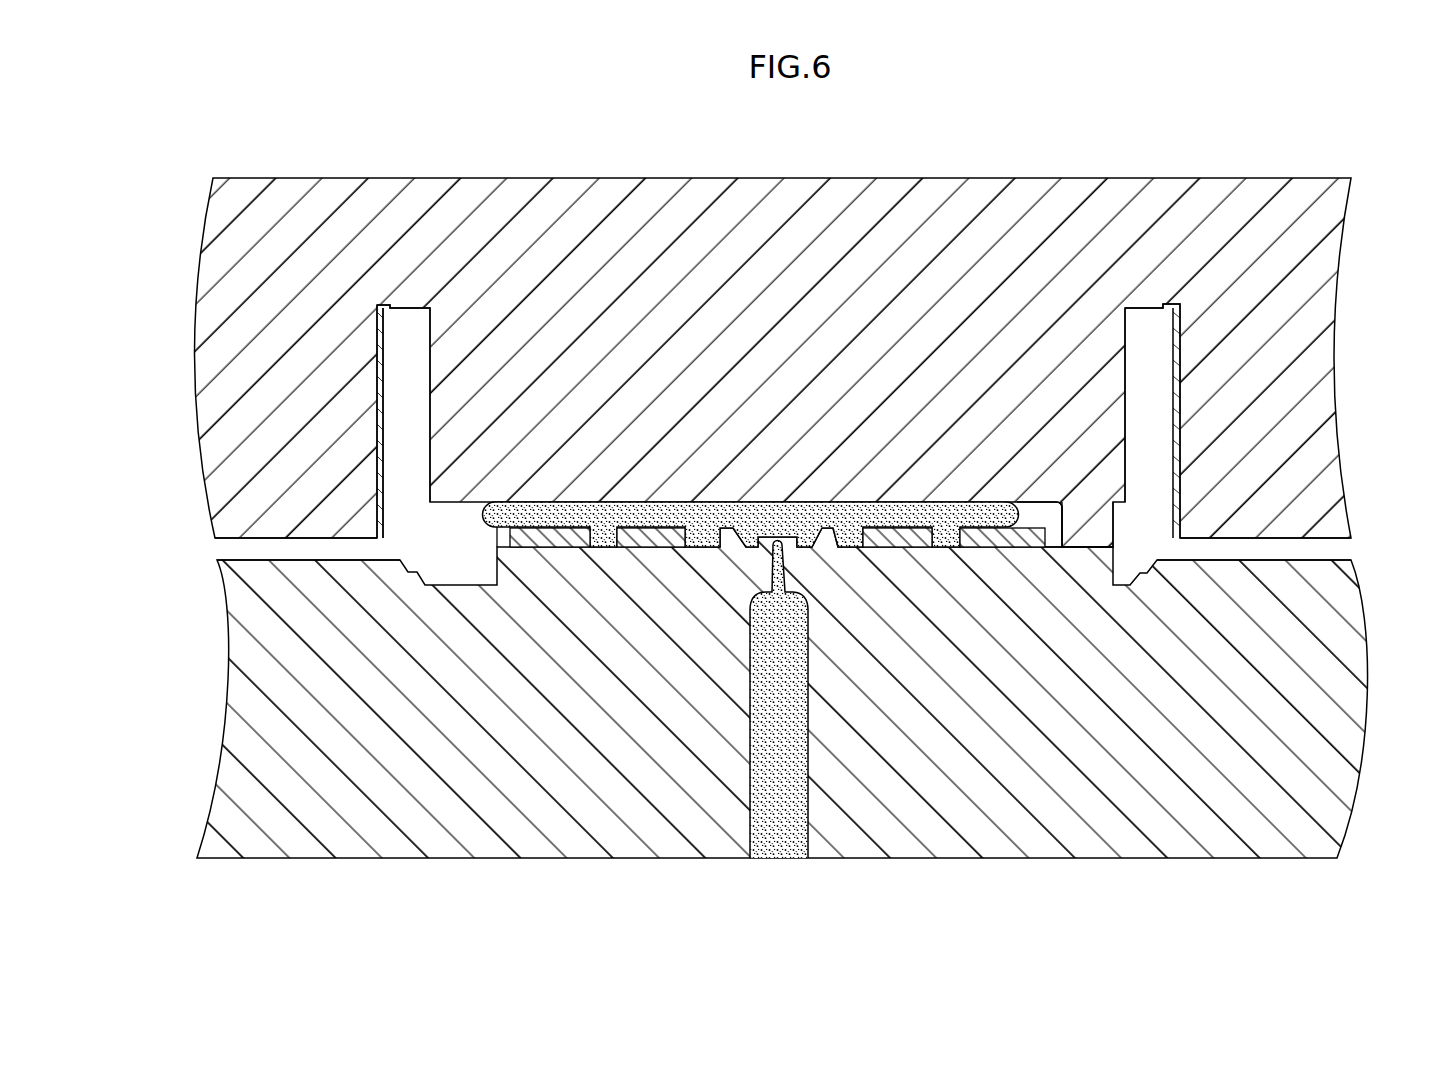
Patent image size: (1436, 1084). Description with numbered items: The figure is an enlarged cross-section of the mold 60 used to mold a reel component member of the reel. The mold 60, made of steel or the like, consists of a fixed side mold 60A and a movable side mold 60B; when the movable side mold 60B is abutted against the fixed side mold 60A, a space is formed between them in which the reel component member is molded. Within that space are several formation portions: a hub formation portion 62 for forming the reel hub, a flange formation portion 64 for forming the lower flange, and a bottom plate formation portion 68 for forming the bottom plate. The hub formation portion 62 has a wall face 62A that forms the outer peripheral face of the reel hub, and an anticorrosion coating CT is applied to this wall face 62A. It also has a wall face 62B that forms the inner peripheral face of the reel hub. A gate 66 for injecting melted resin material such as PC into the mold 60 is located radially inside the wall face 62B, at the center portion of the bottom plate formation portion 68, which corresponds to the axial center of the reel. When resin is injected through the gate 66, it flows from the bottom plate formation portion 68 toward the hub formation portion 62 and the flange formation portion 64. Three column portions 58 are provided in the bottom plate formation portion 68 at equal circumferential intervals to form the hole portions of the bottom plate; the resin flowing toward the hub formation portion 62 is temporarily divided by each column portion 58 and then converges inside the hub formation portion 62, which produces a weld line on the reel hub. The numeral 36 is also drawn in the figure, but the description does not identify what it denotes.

The mold 60 is at (1045, 160).
The fixed side mold 60A is at (1343, 733).
The movable side mold 60B is at (1310, 406).
The hub formation portion 62 is at (1148, 333).
The wall face 62A is at (383, 378).
The wall face 62B is at (430, 378).
The anticorrosion coating CT is at (385, 340).
The flange formation portion 64 is at (1277, 553).
The column portion 58 is at (1093, 530).
The bottom plate formation portion 68 is at (1028, 518).
The terminal plates 36 is at (549, 548).
The gate 66 is at (775, 562).